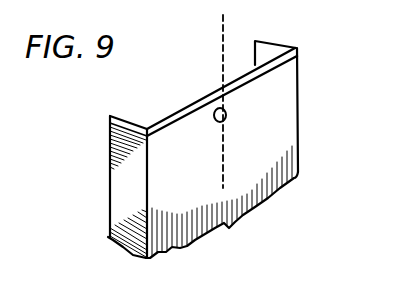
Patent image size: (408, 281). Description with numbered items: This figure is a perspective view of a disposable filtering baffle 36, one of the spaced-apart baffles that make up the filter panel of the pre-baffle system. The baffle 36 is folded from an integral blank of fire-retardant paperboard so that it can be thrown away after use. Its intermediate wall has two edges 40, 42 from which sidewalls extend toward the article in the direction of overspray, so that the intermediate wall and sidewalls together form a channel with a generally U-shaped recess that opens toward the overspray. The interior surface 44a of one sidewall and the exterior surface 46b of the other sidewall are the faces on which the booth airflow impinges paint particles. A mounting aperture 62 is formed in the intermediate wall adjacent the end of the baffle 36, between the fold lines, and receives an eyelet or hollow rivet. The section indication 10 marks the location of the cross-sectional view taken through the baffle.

The section line 10- 10 is at (223, 43).
The disposable filtering baffle 36 is at (284, 187).
The edge of intermediate wall 40 is at (299, 80).
The edge of intermediate wall 42 is at (149, 137).
The interior surface of sidewall 44a is at (269, 46).
The exterior surface of sidewall 46b is at (110, 173).
The mounting aperture 62 is at (226, 113).